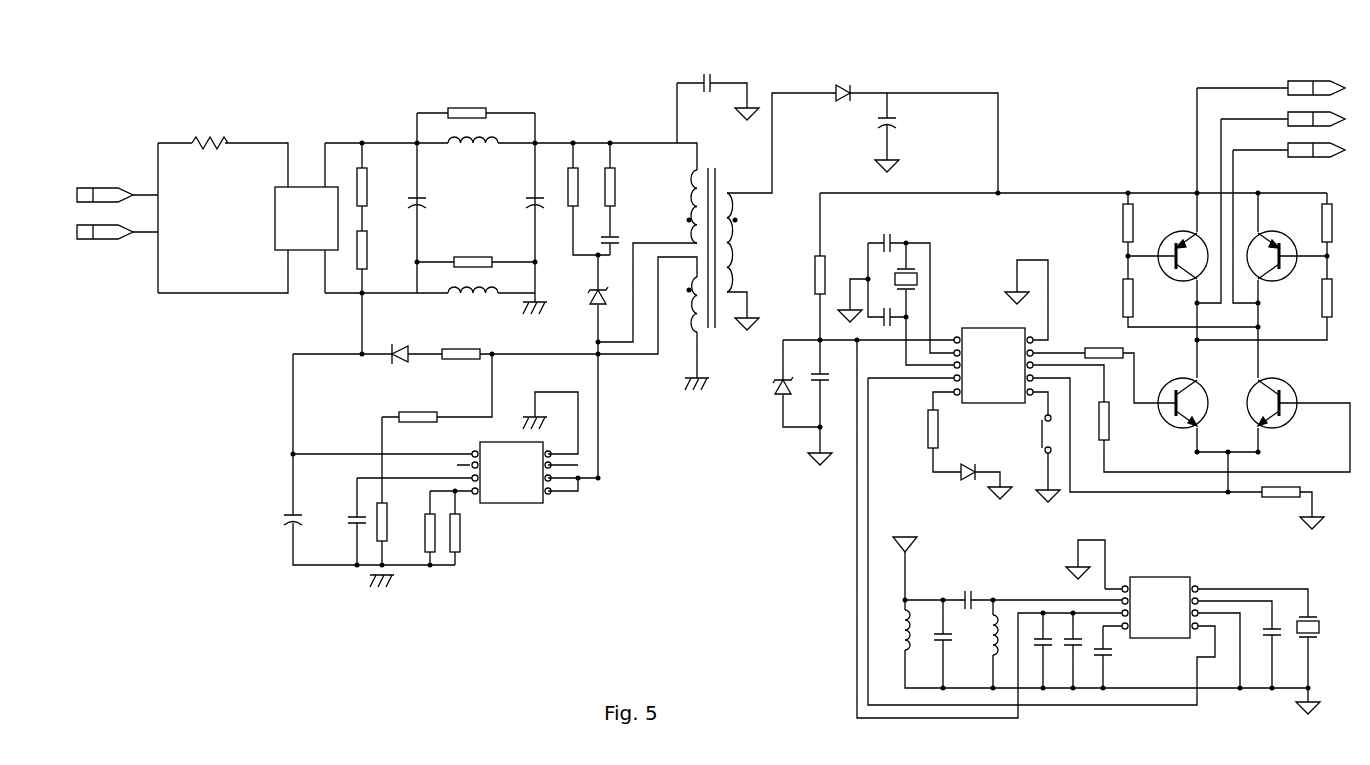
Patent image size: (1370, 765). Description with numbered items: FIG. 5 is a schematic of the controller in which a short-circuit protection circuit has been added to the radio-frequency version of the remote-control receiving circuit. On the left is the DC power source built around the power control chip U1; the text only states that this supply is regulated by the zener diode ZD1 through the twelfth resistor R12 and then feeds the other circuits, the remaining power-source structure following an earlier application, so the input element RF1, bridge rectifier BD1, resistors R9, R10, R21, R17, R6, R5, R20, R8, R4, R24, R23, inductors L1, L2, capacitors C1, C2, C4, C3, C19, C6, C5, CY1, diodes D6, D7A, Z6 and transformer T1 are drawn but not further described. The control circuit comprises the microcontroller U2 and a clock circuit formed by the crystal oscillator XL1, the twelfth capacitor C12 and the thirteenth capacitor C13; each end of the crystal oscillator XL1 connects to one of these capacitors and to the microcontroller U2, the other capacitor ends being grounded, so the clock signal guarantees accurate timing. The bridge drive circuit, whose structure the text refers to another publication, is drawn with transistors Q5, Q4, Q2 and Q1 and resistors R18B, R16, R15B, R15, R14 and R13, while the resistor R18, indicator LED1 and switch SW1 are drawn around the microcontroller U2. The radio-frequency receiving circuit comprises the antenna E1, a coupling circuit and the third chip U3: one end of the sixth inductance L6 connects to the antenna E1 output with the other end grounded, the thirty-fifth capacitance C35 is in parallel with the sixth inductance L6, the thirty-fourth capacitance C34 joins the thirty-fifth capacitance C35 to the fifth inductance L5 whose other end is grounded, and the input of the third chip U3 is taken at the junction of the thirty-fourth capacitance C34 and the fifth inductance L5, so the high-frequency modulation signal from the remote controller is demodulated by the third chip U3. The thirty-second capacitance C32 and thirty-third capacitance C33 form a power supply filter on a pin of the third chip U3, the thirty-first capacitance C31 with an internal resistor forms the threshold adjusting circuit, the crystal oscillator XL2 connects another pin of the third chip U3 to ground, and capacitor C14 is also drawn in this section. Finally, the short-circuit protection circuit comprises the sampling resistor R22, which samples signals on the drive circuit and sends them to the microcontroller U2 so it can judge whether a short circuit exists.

The fuse resistor RF1 is at (210, 137).
The bridge rectifier BD1 is at (290, 219).
The resistor R9 is at (371, 187).
The resistor R10 is at (371, 250).
The resistor R21 is at (467, 107).
The inductor L1 is at (473, 135).
The inductor L2 is at (473, 285).
The resistor R17 is at (473, 256).
The capacitor C1 is at (421, 211).
The capacitor C2 is at (527, 211).
The resistor R6 is at (566, 187).
The resistor R5 is at (618, 187).
The capacitor C4 is at (614, 232).
The zener diode D6 is at (602, 290).
The Y capacitor CY1 is at (706, 77).
The transformer T1 is at (712, 242).
The diode D7A is at (839, 85).
The capacitor C5 is at (892, 115).
The twelfth capacitor C12 is at (888, 237).
The thirteenth capacitor C13 is at (886, 311).
The crystal oscillator XL1 is at (912, 272).
The twelfth resistor R12 is at (812, 275).
The zener diode ZD1 is at (777, 381).
The capacitor C6 is at (825, 371).
The microcontroller U2 is at (993, 359).
The resistor R18 is at (944, 429).
The light emitting diode LED1 is at (966, 482).
The switch SW1 is at (1035, 434).
The resistor R14 is at (1104, 347).
The resistor R13 is at (1113, 421).
The resistor R18B is at (1113, 223).
The resistor R16 is at (1116, 298).
The resistor R15B is at (1342, 223).
The resistor R15 is at (1339, 298).
The transistor Q5 is at (1183, 250).
The transistor Q4 is at (1272, 250).
The transistor Q2 is at (1183, 397).
The transistor Q1 is at (1272, 397).
The sampling resistor R22 is at (1281, 499).
The zener diode Z6 is at (399, 361).
The resistor R20 is at (461, 362).
The resistor R8 is at (418, 424).
The power control chip U1 is at (511, 466).
The capacitor C3 is at (289, 513).
The capacitor C19 is at (348, 513).
The resistor R4 is at (390, 522).
The resistor R24 is at (427, 548).
The resistor R23 is at (456, 548).
The antenna E1 is at (905, 538).
The capacitor C14 is at (969, 593).
The sixth inductance L6 is at (914, 630).
The thirty-fifth capacitance C35 is at (954, 638).
The fifth inductance L5 is at (1002, 635).
The thirty-third capacitance C33 is at (1047, 636).
The thirty-second capacitance C32 is at (1078, 636).
The thirty-fourth capacitance C34 is at (1110, 647).
The third chip U3 is at (1160, 600).
The thirty-first capacitance C31 is at (1279, 627).
The crystal oscillator XL2 is at (1314, 620).